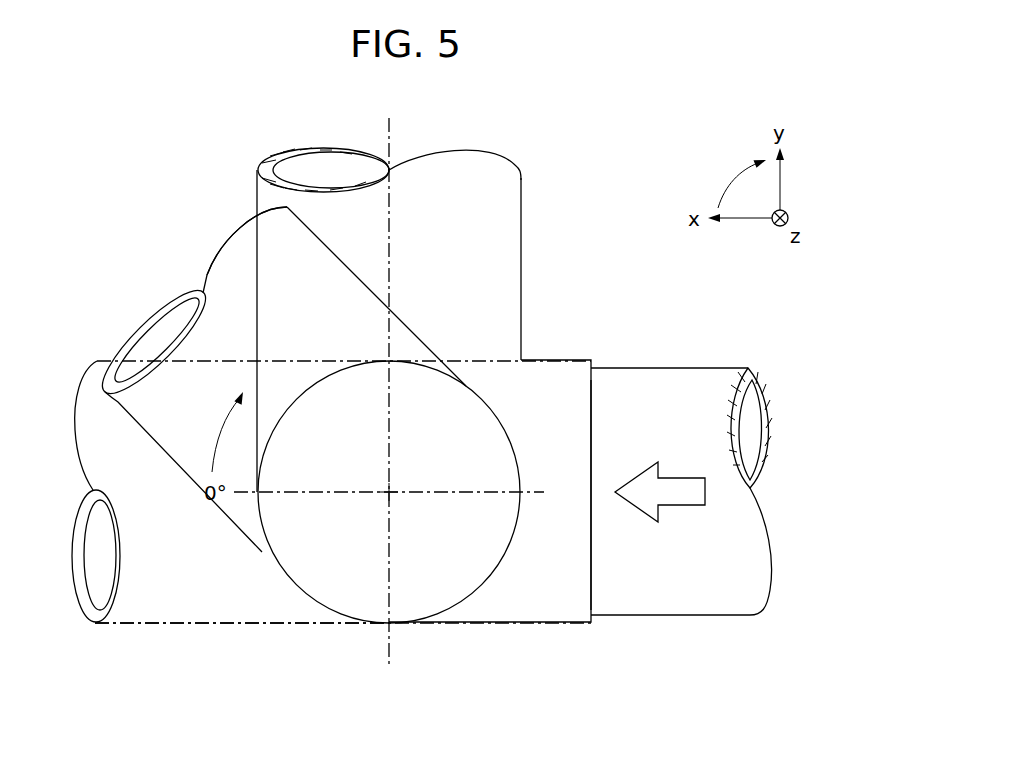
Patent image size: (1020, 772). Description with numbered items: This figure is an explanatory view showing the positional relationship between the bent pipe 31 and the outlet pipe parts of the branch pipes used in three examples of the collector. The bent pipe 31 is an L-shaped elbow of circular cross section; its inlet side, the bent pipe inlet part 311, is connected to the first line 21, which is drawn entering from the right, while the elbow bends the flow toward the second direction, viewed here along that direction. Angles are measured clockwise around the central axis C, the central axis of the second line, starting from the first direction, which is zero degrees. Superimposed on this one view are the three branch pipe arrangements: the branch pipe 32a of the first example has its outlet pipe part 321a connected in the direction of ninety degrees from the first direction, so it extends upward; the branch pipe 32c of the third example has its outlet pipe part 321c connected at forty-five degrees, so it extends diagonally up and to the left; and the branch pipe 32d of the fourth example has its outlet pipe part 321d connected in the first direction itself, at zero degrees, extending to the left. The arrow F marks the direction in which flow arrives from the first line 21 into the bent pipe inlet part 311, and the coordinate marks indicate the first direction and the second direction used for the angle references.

The first line 21 is at (683, 383).
The bent pipe 31 is at (557, 350).
The bent pipe inlet part 311 is at (580, 492).
The branch pipe 32a is at (530, 204).
The outlet pipe part 321a is at (447, 177).
The branch pipe 32c is at (198, 270).
The outlet pipe part 321c is at (237, 265).
The branch pipe 32d is at (247, 634).
The outlet pipe part 321d is at (167, 600).
The central axis C is at (389, 492).
The force direction F is at (670, 492).